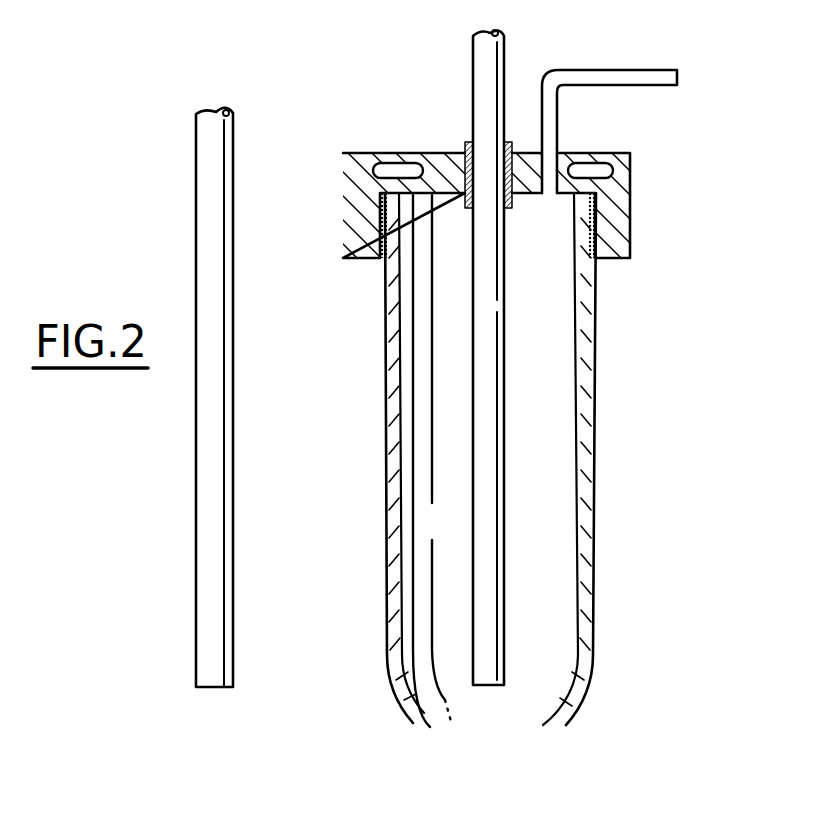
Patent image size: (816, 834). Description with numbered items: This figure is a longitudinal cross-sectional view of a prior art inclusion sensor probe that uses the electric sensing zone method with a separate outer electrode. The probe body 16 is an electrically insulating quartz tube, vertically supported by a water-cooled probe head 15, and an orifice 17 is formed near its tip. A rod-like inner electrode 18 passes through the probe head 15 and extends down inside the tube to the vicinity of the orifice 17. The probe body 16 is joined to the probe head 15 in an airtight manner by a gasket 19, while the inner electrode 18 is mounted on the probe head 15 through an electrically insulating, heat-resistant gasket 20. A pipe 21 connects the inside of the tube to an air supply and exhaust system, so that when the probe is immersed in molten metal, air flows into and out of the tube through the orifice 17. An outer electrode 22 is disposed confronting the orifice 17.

The probe head 15 is at (618, 208).
The probe body 16 is at (392, 415).
The orifice 17 is at (390, 662).
The inner electrode 18 is at (476, 521).
The gasket 19 is at (594, 263).
The electrically insulating, heat-resistant gasket 20 is at (468, 150).
The pipe 21 is at (628, 78).
The outer electrode 22 is at (218, 467).